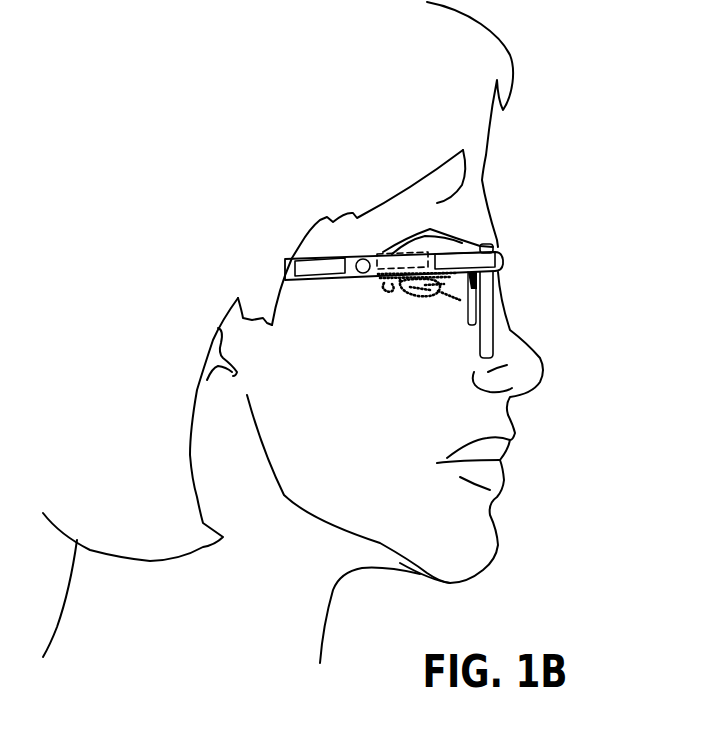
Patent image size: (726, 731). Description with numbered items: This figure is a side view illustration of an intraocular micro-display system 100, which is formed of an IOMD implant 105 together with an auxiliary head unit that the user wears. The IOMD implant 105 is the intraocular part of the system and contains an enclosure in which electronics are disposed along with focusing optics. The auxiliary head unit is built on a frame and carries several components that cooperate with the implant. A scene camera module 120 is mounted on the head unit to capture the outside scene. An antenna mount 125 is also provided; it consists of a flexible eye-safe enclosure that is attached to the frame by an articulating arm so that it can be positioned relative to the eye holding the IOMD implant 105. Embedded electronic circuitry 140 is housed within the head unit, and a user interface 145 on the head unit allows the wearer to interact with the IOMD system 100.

The IOMD system 100 is at (522, 172).
The IOMD implant 105 is at (408, 288).
The scene camera module 120 is at (500, 249).
The antenna mount 125 is at (458, 312).
The embedded electronic circuitry 140 is at (413, 268).
The user interface 145 is at (293, 281).